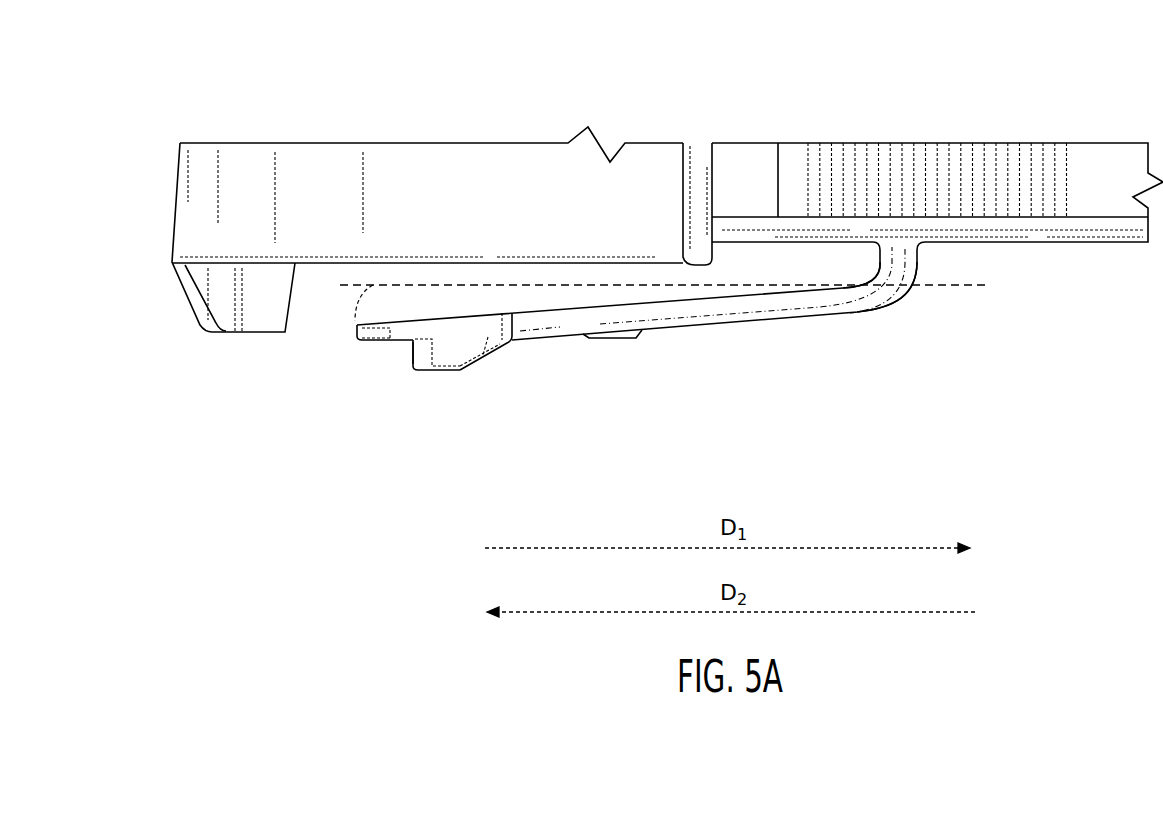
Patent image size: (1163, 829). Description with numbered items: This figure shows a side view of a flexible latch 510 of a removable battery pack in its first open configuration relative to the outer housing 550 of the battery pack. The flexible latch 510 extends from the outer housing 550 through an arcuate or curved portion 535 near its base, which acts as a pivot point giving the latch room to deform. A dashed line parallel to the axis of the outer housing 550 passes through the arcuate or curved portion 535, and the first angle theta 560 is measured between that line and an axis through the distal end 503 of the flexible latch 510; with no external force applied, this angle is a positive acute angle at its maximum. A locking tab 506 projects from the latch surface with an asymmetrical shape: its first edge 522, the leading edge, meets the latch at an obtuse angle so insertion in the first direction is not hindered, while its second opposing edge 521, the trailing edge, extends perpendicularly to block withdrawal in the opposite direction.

The distal end 503 is at (356, 326).
The locking tab 506 is at (437, 373).
The flexible latch 510 is at (716, 378).
The second opposing edge 521 is at (408, 350).
The first edge 522 is at (488, 341).
The arcuate or curved portion 535 is at (900, 297).
The outer housing 550 is at (1052, 247).
The first angle θ 560 is at (333, 293).